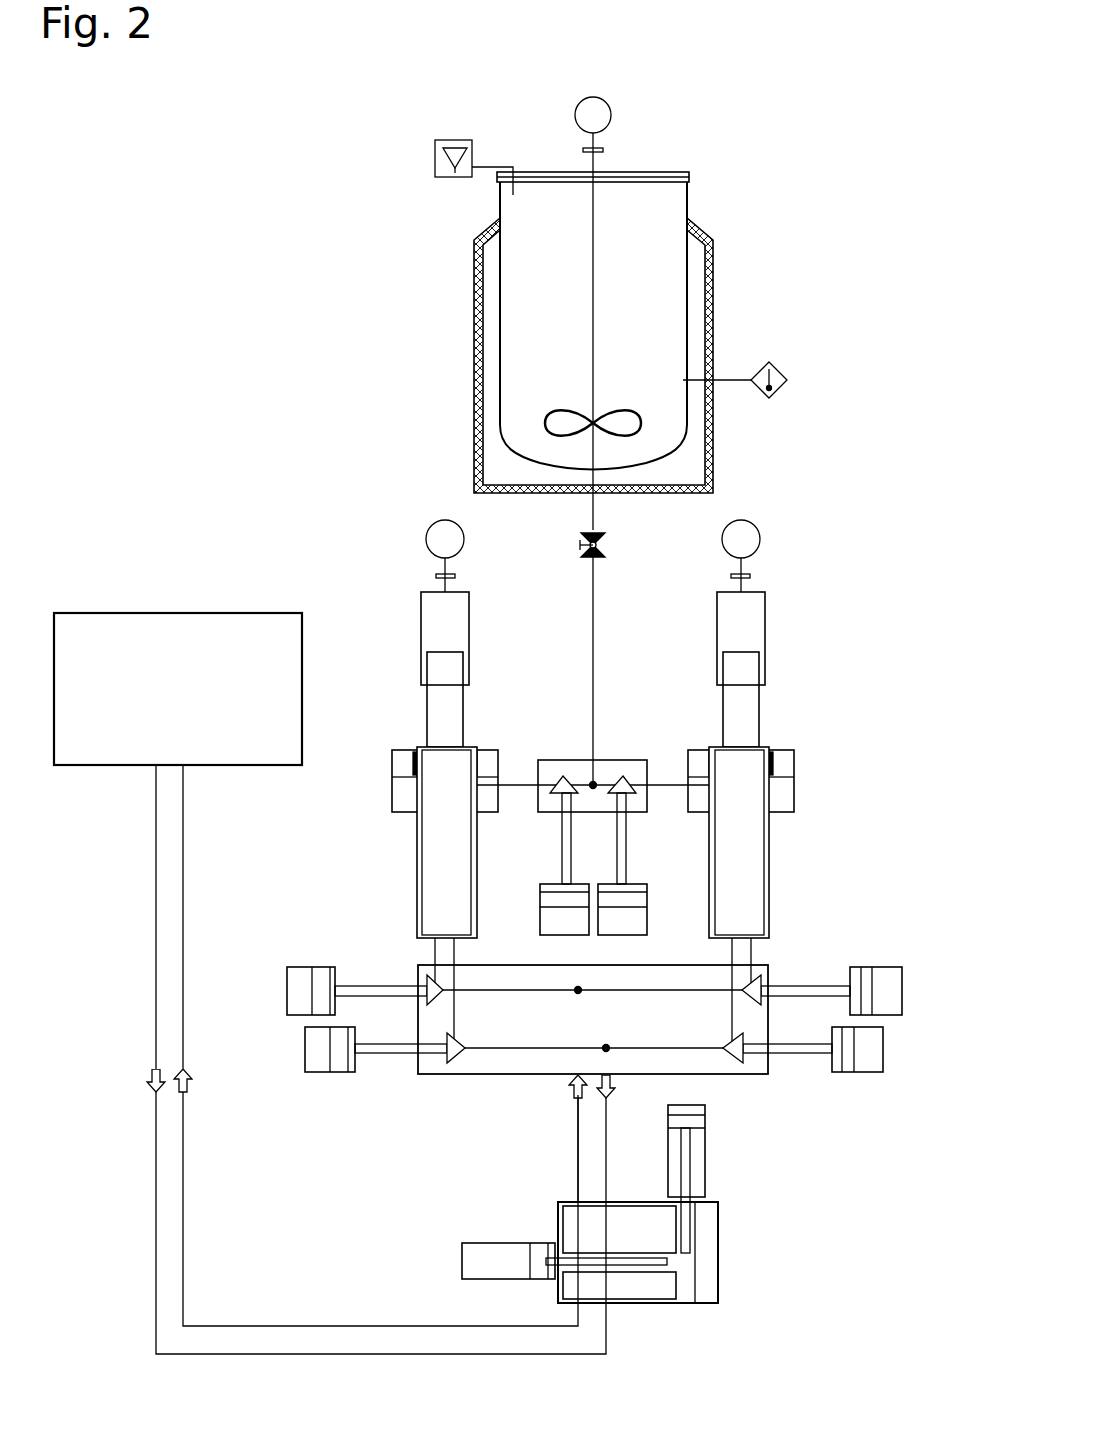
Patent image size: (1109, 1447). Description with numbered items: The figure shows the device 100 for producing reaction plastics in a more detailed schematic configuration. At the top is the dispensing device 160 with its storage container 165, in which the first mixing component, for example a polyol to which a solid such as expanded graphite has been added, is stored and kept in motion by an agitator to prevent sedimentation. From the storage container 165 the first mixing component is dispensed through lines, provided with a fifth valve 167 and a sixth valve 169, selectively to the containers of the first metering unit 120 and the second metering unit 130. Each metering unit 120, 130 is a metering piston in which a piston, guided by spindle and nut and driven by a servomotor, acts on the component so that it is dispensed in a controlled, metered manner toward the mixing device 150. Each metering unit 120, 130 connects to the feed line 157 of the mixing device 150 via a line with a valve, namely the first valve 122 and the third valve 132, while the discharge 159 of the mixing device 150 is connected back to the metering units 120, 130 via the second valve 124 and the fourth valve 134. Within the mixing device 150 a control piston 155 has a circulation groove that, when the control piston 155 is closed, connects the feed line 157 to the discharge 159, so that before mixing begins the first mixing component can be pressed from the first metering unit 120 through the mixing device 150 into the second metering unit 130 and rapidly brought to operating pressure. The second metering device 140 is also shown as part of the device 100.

The device 100 is at (202, 222).
The first metering unit 120 is at (415, 842).
The first valve 122 is at (305, 1072).
The second valve 124 is at (285, 980).
The second metering unit 130 is at (770, 842).
The third valve 132 is at (852, 1073).
The fourth valve 134 is at (875, 967).
The second metering device 140 is at (178, 689).
The mixing device 150 is at (725, 1260).
The control piston 155 is at (472, 1243).
The feed line 157 is at (660, 1105).
The discharge 159 is at (578, 1108).
The dispensing device 160 is at (712, 243).
The storage container 165 is at (650, 160).
The fifth valve 167 is at (555, 758).
The sixth valve 169 is at (630, 758).